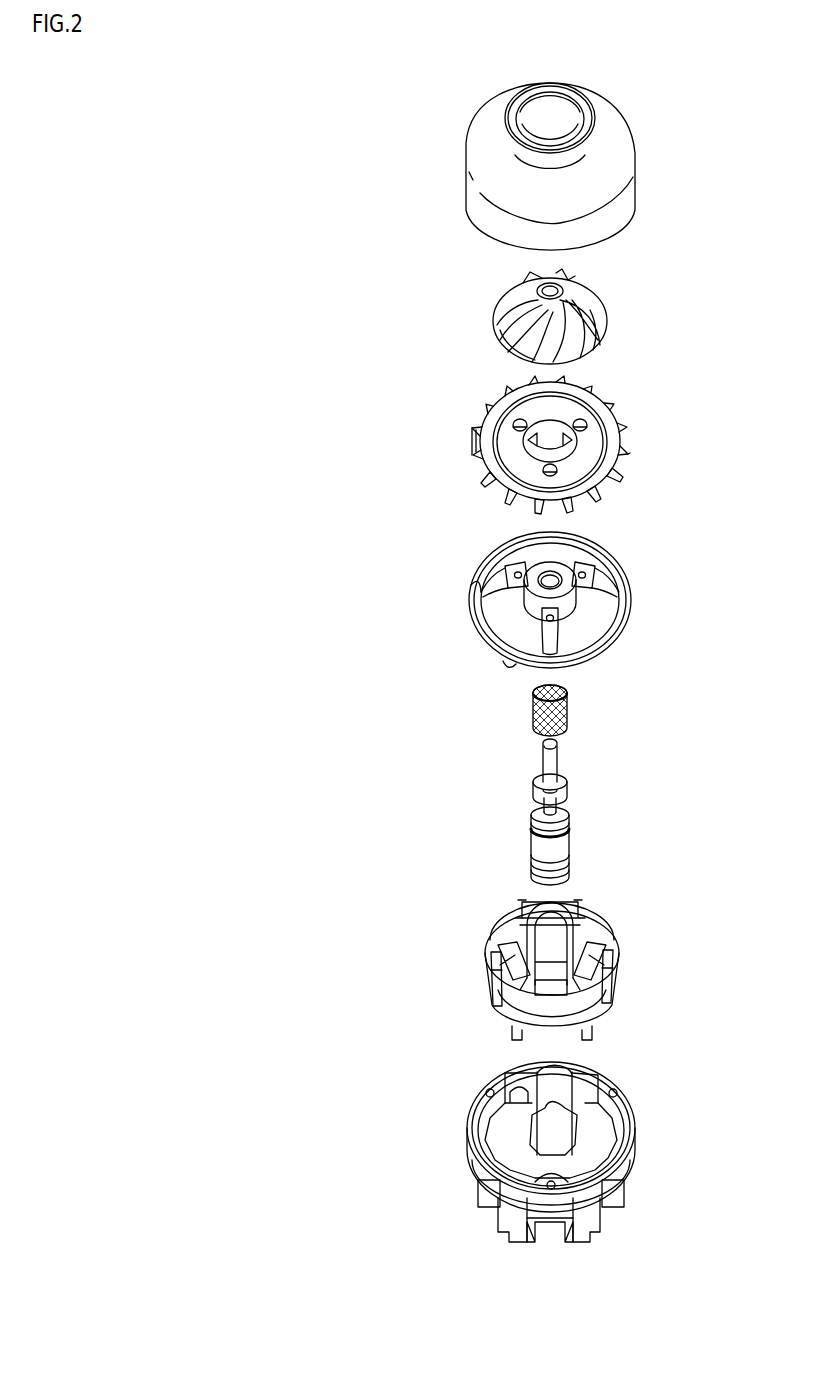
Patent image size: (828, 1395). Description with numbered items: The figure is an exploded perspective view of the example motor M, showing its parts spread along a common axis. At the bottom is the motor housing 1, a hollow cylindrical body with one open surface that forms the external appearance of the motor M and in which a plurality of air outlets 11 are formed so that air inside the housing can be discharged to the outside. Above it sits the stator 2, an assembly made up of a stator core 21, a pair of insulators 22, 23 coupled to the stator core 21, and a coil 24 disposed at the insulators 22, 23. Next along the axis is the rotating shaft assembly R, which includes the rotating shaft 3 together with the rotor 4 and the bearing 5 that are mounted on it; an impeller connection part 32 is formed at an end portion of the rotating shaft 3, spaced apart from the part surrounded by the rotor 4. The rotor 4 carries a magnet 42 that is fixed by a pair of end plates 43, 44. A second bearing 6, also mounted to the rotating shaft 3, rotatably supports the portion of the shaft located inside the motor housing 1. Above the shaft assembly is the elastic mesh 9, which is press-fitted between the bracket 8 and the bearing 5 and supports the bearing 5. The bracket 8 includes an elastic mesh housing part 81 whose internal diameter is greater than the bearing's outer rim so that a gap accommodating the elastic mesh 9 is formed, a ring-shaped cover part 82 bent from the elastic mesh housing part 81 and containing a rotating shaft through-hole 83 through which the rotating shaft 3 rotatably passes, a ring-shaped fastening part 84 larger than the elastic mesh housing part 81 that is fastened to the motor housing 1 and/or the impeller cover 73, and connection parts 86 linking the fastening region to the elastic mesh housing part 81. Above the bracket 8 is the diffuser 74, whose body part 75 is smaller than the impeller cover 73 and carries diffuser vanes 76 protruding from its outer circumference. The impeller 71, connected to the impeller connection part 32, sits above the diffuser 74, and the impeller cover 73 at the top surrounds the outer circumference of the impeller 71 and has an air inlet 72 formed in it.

The motor housing 1 is at (636, 1152).
The air outlet 11 is at (497, 1140).
The stator 2 is at (627, 952).
The stator core 21 is at (613, 975).
The insulator 22 is at (600, 1011).
The insulator 23 is at (516, 962).
The coil 24 is at (500, 934).
The rotating shaft 3 is at (555, 762).
The impeller connection part 32 is at (556, 744).
The rotor 4 is at (576, 836).
The magnet 42 is at (540, 842).
The end plate 43 is at (548, 860).
The end plate 44 is at (538, 812).
The bearing 5 is at (528, 781).
The second bearing 6 is at (576, 879).
The impeller 71 is at (594, 316).
The air inlet 72 is at (563, 117).
The impeller cover 73 is at (620, 142).
The diffuser 74 is at (472, 430).
The body part 75 is at (607, 412).
The diffuser vane 76 is at (630, 453).
The bracket 8 is at (627, 583).
The elastic mesh housing part 81 is at (575, 592).
The cover part 82 is at (568, 563).
The rotating shaft through-hole 83 is at (553, 573).
The fastening part 84 is at (472, 585).
The connection part 86 is at (515, 563).
The elastic mesh 9 is at (566, 709).
The motor M is at (385, 143).
The rotating shaft assembly R is at (618, 805).